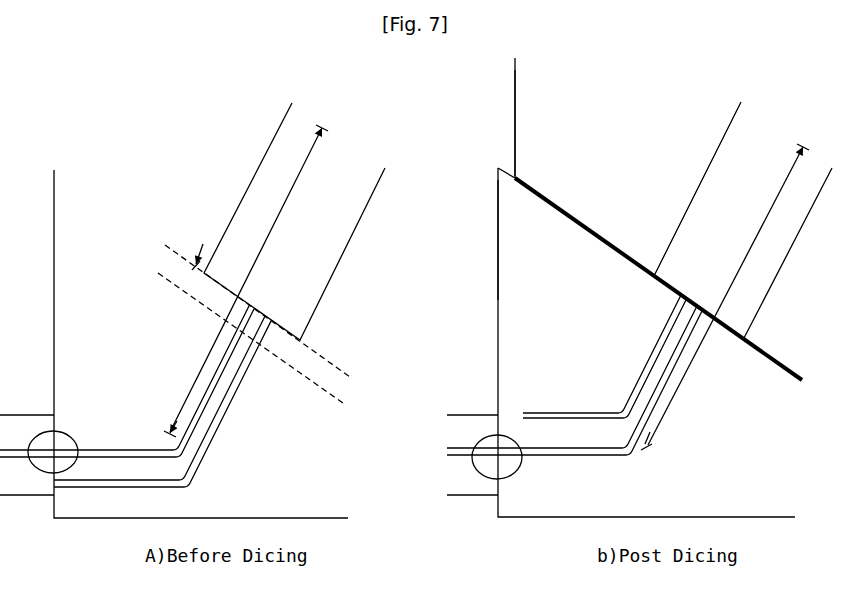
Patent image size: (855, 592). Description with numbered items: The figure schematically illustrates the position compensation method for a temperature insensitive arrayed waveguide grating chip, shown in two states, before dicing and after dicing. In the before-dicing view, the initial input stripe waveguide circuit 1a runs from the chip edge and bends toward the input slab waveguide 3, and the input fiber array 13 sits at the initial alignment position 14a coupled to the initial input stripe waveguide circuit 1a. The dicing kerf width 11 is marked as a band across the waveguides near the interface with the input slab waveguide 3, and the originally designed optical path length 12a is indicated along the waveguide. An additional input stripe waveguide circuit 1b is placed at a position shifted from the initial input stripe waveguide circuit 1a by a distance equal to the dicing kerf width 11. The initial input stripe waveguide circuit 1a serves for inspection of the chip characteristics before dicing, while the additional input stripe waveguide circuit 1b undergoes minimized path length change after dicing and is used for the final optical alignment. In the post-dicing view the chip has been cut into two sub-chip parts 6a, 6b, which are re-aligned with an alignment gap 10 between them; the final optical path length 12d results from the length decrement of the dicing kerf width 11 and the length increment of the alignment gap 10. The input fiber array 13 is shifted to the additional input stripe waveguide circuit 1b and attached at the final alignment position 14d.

The input slab waveguide 3 is at (275, 193).
The dicing kerf width 11 is at (187, 292).
The originally designed optical path length 12a is at (188, 362).
The final optical path length 12d is at (700, 400).
The initial input stripe waveguide circuit 1a is at (163, 450).
The additional input stripe waveguide circuit 1b is at (217, 432).
The initial alignment position 14a is at (68, 478).
The connection portion after dicing 14d is at (513, 463).
The input fiber array 13 is at (28, 513).
The alignment gap 10 is at (762, 366).
The sub-chip part 6a is at (521, 240).
The sub-chip part 6b is at (548, 128).